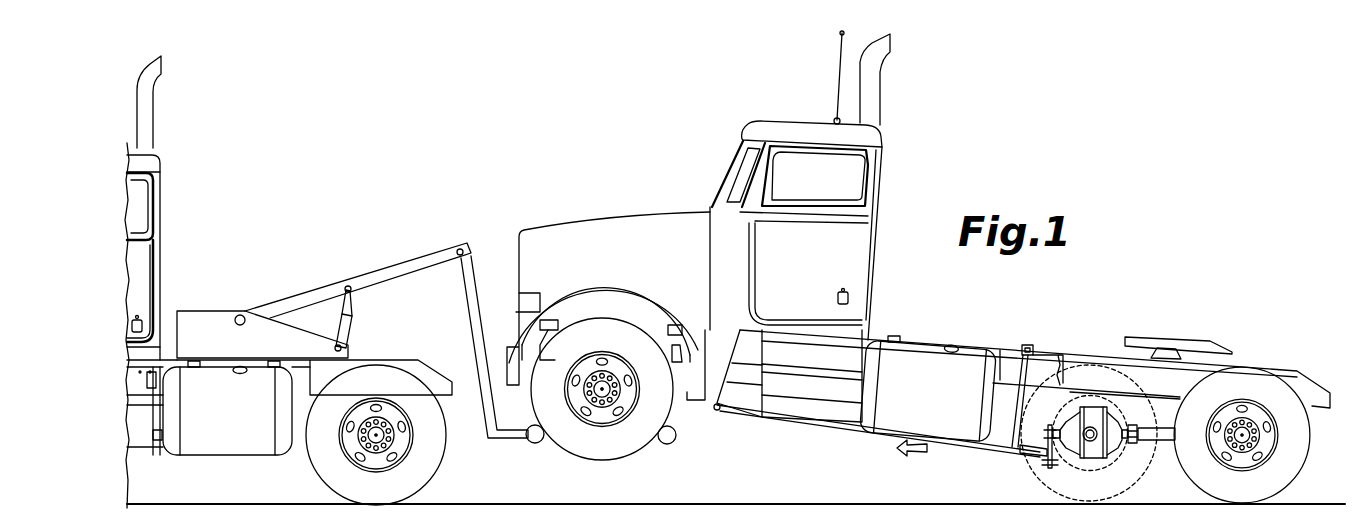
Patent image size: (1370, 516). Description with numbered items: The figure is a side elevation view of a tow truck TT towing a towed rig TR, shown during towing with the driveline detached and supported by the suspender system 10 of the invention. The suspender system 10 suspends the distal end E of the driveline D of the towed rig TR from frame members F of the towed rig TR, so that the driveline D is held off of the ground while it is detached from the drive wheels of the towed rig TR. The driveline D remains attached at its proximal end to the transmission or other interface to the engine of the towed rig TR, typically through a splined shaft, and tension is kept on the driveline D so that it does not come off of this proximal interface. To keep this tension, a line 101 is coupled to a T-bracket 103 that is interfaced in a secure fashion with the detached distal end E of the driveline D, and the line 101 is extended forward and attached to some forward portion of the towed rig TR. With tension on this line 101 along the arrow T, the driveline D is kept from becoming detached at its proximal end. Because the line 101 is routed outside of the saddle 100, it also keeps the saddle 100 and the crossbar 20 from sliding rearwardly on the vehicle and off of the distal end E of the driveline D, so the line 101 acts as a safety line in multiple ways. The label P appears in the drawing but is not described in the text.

The tow truck TT is at (196, 211).
The towed rig TR is at (686, 166).
The suspender system 10 is at (1040, 322).
The crossbar 20 is at (1025, 345).
The pump P is at (1054, 353).
The frame members F is at (1163, 372).
The distal end E is at (1050, 432).
The saddle 100 is at (1017, 407).
The line 101 is at (955, 444).
The T-bracket 103 is at (1035, 458).
The driveline D is at (993, 443).
The arrow T is at (913, 458).